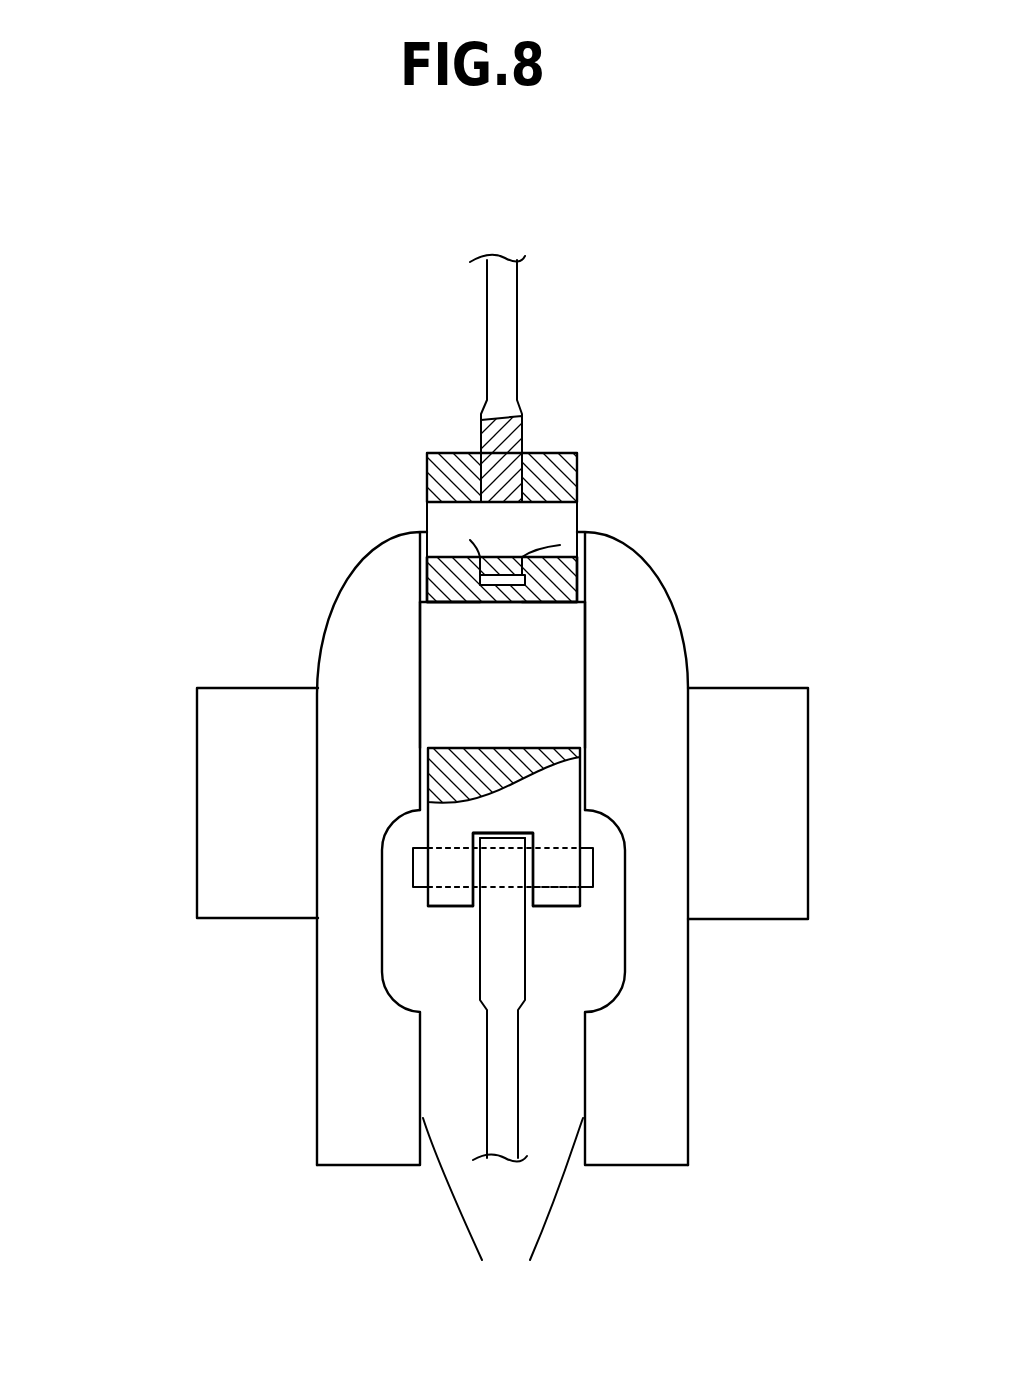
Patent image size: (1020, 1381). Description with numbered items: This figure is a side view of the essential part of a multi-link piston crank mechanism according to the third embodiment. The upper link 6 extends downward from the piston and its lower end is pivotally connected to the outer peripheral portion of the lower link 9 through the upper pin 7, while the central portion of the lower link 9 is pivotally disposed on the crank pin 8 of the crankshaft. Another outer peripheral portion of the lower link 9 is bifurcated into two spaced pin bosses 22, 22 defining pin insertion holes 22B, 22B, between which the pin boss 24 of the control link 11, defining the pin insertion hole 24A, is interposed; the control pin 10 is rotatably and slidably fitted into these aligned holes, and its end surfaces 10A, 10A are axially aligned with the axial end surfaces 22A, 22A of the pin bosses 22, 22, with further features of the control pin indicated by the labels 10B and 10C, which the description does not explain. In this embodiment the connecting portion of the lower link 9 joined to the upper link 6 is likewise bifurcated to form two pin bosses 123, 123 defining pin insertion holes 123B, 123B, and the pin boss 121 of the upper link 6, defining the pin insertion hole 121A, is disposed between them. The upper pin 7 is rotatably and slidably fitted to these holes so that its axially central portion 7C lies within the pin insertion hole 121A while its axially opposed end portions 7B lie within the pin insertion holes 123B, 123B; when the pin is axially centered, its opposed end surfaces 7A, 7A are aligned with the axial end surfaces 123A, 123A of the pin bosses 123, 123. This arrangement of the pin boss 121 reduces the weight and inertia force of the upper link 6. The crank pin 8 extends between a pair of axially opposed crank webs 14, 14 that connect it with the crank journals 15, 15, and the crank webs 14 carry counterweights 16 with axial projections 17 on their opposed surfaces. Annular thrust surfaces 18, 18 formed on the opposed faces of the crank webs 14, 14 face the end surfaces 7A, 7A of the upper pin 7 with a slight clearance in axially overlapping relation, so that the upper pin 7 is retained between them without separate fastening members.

The upper link 6 is at (498, 357).
The upper pin 7 is at (499, 395).
The axial end surfaces of upper pin 7A is at (430, 518).
The axially opposed end portions of upper pin 7B is at (427, 512).
The axially central portion of upper pin 7C is at (537, 450).
The crank pin 8 is at (432, 690).
The lower link 9 is at (545, 787).
The control pin 10 is at (504, 974).
The end surfaces of control pin 10A is at (450, 880).
The hole lower edge 10B is at (438, 862).
The hole inner portion 10C is at (478, 908).
The control link 11 is at (500, 1072).
The crank webs 14 is at (350, 604).
The crank journals 15 is at (220, 862).
The counterweights 16 is at (338, 987).
The axial projections 17 is at (503, 1196).
The thrust surfaces 18 is at (430, 565).
The pin bosses of lower link 22 is at (488, 979).
The axial end surfaces of pin bosses 22A is at (445, 902).
The pin insertion holes of lower link pin bosses 22B is at (445, 898).
The pin boss of control link 24 is at (495, 850).
The pin insertion hole of control link pin boss 24A is at (475, 834).
The pin boss of upper link 121 is at (445, 528).
The pin insertion hole of upper link pin boss 121A is at (555, 548).
The pin bosses of lower link 123 is at (460, 445).
The axial end surfaces of pin bosses 123A is at (427, 497).
The pin insertion holes of lower link pin bosses 123B is at (427, 505).